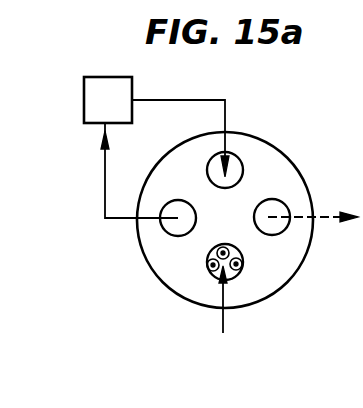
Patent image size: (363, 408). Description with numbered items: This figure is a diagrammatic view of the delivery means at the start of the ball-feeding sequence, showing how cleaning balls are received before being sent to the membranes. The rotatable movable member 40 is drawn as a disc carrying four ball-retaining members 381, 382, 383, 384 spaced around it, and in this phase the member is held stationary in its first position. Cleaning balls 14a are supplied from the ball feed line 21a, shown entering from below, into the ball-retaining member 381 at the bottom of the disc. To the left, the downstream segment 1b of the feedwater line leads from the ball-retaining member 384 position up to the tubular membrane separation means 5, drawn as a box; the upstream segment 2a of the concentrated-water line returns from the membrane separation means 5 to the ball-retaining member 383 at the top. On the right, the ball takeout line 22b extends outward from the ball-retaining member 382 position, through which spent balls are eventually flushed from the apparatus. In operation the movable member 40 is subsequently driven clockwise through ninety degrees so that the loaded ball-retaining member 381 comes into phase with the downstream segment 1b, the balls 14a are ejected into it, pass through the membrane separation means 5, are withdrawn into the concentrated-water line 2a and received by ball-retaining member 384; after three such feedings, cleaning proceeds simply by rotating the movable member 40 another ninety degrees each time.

The tubular membrane separation means 5 is at (88, 77).
The upstream segment of concentrated-water line 2a is at (193, 99).
The downstream segment of feedwater line 1b is at (105, 172).
The movable member 40 is at (252, 133).
The ball-retaining member 383 is at (211, 156).
The ball-retaining member 384 is at (162, 229).
The ball-retaining member 382 is at (291, 229).
The ball-retaining member 381 is at (207, 262).
The cleaning balls 14a is at (239, 273).
The ball feed line 21a is at (221, 328).
The ball takeout line 22b is at (337, 212).